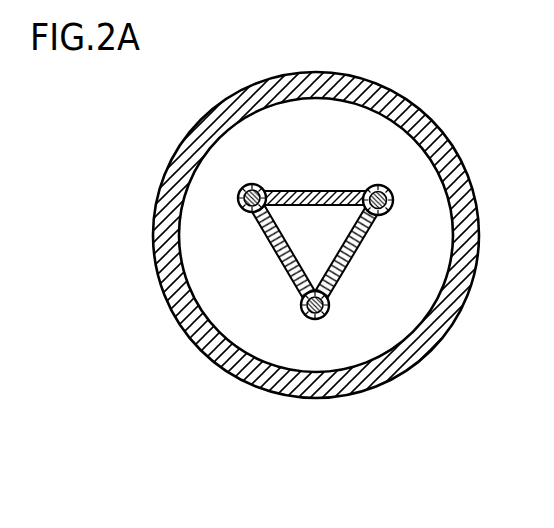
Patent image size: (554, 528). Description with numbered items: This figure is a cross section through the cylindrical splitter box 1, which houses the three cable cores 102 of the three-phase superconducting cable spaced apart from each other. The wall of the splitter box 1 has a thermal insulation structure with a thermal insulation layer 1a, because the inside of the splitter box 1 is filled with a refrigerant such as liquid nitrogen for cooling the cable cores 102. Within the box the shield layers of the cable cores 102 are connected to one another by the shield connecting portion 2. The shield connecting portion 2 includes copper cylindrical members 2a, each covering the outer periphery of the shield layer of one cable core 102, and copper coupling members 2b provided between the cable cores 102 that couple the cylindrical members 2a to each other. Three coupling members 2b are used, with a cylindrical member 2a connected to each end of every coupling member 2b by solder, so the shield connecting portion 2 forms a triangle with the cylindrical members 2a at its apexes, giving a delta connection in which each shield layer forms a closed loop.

The splitter box 1 is at (316, 222).
The thermal insulation layer 1a is at (339, 80).
The shield connecting portion 2 is at (319, 229).
The cylindrical member 2a is at (317, 300).
The coupling member 2b is at (328, 193).
The cable core 102 is at (239, 191).